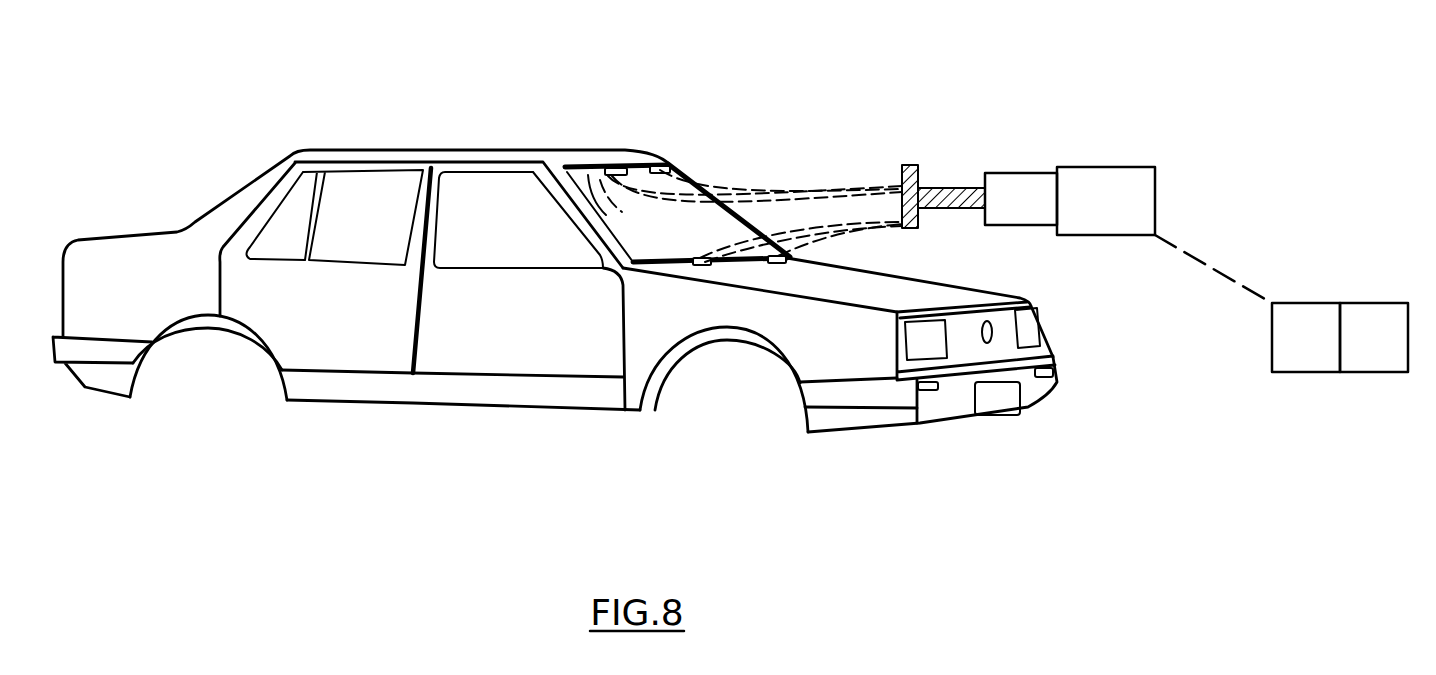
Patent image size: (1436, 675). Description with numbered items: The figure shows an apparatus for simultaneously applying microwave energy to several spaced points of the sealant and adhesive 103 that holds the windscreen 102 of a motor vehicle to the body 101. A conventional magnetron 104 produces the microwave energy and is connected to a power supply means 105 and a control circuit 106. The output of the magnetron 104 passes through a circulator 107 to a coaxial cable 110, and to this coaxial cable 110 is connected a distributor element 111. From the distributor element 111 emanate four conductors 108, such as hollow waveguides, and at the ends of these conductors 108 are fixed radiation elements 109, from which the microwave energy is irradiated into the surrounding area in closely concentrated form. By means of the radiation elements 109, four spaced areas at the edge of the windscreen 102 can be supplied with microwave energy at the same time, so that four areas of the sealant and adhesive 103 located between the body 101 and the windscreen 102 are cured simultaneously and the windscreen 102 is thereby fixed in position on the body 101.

The body 101 is at (472, 432).
The windscreen 102 is at (570, 167).
The sealant and adhesive 103 is at (727, 263).
The magnetron 104 is at (1120, 182).
The power supply means 105 is at (1310, 352).
The control circuit 106 is at (1380, 348).
The circulator 107 is at (1028, 183).
The conductors 108 is at (792, 197).
The radiation elements 109 is at (605, 170).
The coaxial cable 110 is at (955, 188).
The distributor element 111 is at (910, 167).